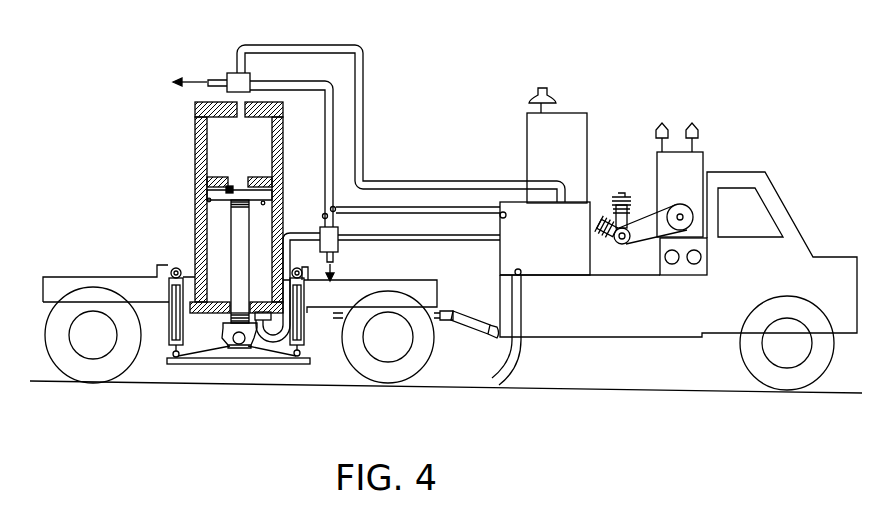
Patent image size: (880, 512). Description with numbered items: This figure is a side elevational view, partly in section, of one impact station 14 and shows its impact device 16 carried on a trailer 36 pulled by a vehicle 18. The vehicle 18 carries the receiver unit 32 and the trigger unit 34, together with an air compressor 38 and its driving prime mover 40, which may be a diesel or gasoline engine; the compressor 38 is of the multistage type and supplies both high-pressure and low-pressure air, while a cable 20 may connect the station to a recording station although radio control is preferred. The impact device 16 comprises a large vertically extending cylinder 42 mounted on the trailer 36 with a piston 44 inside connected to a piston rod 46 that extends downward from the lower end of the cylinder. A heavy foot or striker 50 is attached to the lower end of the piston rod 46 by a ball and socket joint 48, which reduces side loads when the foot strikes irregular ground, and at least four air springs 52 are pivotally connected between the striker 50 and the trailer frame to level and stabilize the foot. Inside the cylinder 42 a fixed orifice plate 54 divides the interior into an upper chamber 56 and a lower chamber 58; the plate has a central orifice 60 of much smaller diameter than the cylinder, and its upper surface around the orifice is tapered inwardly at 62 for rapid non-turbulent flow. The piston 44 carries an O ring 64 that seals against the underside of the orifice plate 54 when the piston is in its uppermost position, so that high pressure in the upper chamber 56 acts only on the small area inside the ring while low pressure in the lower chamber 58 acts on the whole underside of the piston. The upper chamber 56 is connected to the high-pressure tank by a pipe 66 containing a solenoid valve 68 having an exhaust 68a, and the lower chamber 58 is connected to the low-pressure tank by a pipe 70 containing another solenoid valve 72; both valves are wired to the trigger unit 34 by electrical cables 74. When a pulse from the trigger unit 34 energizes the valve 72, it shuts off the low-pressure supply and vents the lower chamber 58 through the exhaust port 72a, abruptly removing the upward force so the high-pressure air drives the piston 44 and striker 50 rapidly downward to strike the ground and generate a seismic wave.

The impact station 14 is at (409, 429).
The impact device 16 is at (175, 204).
The vehicle 18 is at (775, 198).
The cable 20 is at (507, 365).
The receiver unit 32 is at (583, 202).
The trigger unit 34 is at (590, 203).
The trailer 36 is at (122, 284).
The air compressor 38 is at (623, 245).
The prime mover 40 is at (697, 166).
The cylinder 42 is at (195, 150).
The piston 44 is at (262, 205).
The piston rod 46 is at (237, 234).
The ball and socket joint 48 is at (232, 343).
The striker 50 is at (212, 368).
The air springs 52 is at (170, 335).
The orifice plate 54 is at (206, 183).
The upper chamber 56 is at (241, 129).
The lower chamber 58 is at (215, 257).
The orifice 60 is at (249, 186).
The tapered surface 62 is at (229, 186).
The O ring 64 is at (268, 212).
The pipe 66 is at (366, 112).
The solenoid valve 68 is at (252, 75).
The exhaust port 68a is at (222, 78).
The pipe 70 is at (432, 238).
The solenoid valve 72 is at (320, 244).
The exhaust port 72a is at (346, 238).
The electrical cables 74 is at (343, 210).